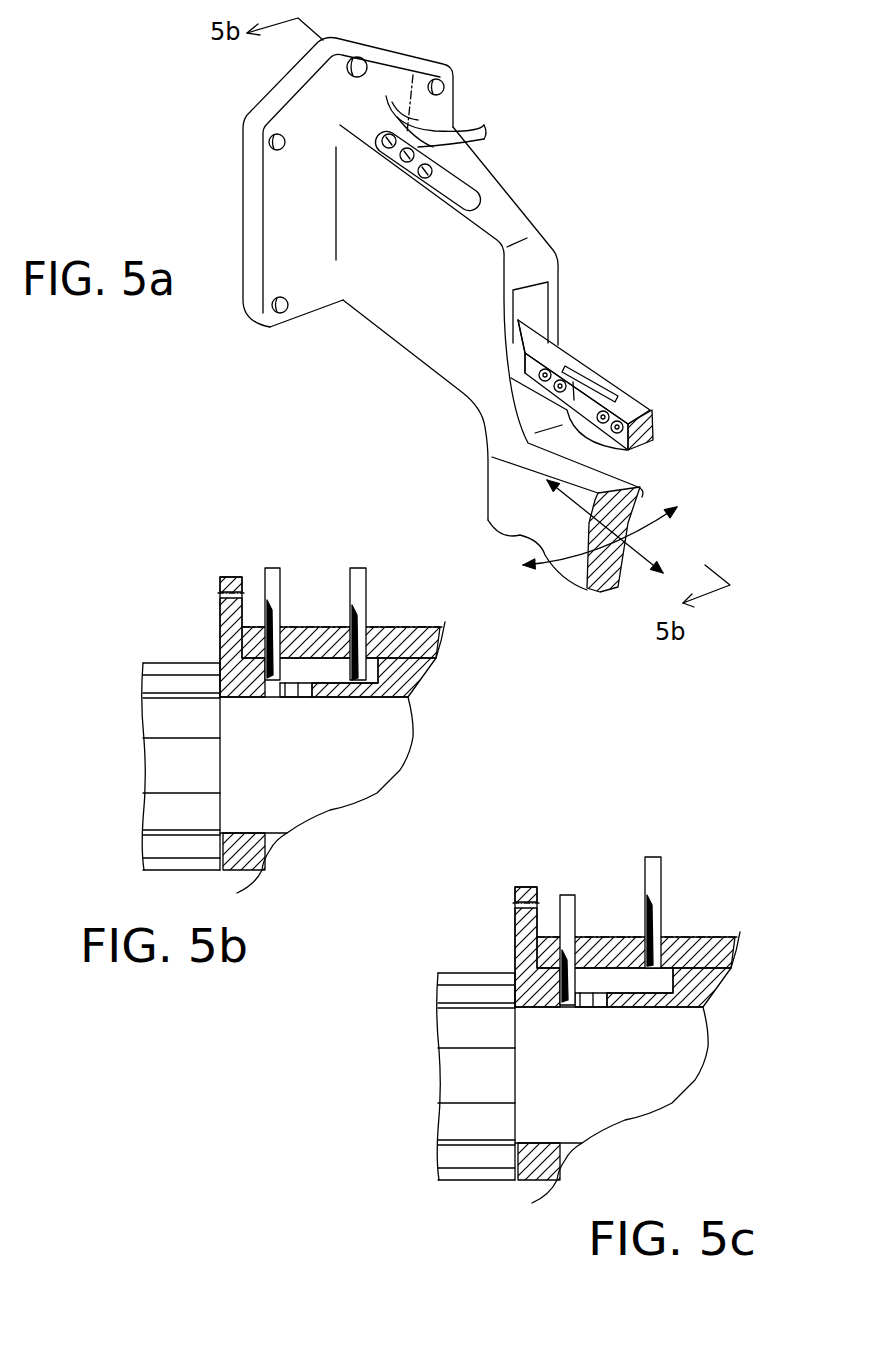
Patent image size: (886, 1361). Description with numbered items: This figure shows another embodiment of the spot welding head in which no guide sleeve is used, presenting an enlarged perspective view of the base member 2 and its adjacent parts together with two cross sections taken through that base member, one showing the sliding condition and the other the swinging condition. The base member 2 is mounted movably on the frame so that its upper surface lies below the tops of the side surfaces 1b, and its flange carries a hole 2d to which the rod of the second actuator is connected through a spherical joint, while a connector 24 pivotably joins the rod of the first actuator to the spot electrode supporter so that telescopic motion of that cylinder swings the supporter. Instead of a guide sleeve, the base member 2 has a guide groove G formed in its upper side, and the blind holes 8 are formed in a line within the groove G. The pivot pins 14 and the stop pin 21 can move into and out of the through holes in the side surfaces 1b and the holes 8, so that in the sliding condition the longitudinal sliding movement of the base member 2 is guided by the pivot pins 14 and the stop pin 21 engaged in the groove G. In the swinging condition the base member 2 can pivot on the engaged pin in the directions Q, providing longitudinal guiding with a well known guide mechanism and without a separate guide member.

In FIG. 5a, the base member 2 is at (502, 211).
In FIG. 5b, the base member 2 is at (288, 797).
In FIG. 5c, the base member 2 is at (611, 1105).
In FIG. 5a, the hole 2d is at (367, 66).
In FIG. 5a, the blind holes 8 is at (485, 127).
In FIG. 5b, the blind holes 8 is at (295, 697).
In FIG. 5c, the blind holes 8 is at (591, 1030).
In FIG. 5a, the guide groove G is at (460, 198).
In FIG. 5b, the guide groove G is at (308, 668).
In FIG. 5c, the guide groove G is at (624, 939).
In FIG. 5a, the connector 24 is at (633, 403).
In FIG. 5a, the directions Q is at (643, 535).
In FIG. 5b, the pivot pins 14 is at (268, 578).
In FIG. 5c, the pivot pins 14 is at (535, 916).
In FIG. 5b, the stop pin 21 is at (354, 578).
In FIG. 5c, the stop pin 21 is at (627, 898).
In FIG. 5b, the side surfaces 1b is at (405, 636).
In FIG. 5c, the side surfaces 1b is at (642, 925).